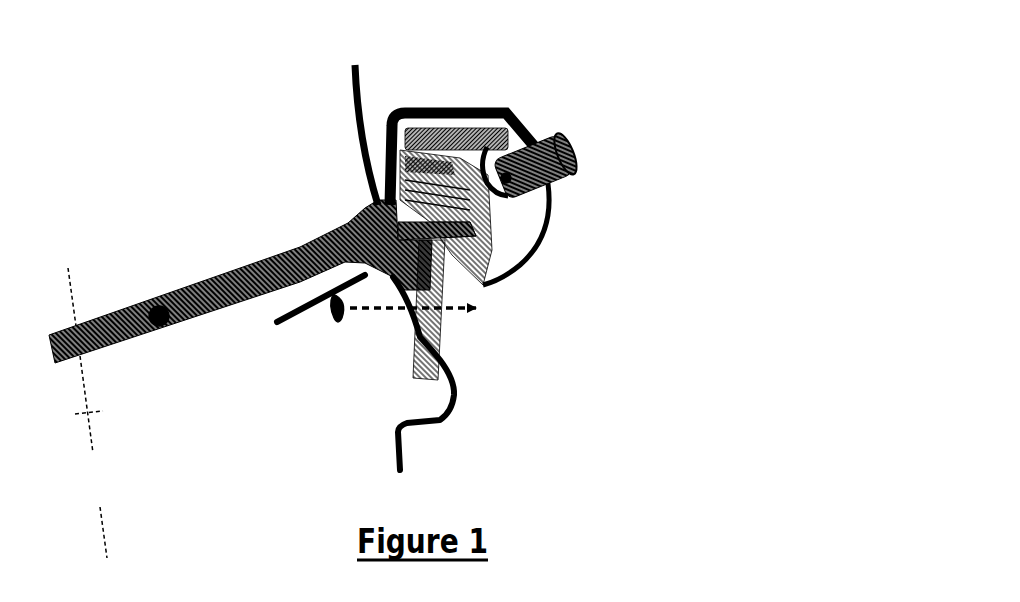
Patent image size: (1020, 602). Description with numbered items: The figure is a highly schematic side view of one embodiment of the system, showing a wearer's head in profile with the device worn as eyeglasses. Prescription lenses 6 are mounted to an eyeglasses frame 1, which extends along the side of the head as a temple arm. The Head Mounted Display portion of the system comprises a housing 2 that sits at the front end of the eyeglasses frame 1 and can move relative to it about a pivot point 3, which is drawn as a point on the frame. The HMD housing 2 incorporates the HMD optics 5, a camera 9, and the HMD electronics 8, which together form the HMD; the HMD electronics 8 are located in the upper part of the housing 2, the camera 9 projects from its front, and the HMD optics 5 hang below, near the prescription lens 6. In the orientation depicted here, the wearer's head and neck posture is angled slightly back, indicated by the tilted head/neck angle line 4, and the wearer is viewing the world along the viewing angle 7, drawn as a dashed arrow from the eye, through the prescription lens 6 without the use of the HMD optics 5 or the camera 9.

The eyeglasses frame 1 is at (113, 312).
The housing 2 is at (343, 242).
The pivot point 3 is at (168, 344).
The head/neck posture angled slightly back 4 is at (292, 592).
The HMD optics 5 is at (485, 227).
The prescription lens 6 is at (430, 327).
The viewing the world 7 is at (462, 321).
The HMD electronics 8 is at (452, 137).
The camera 9 is at (575, 150).